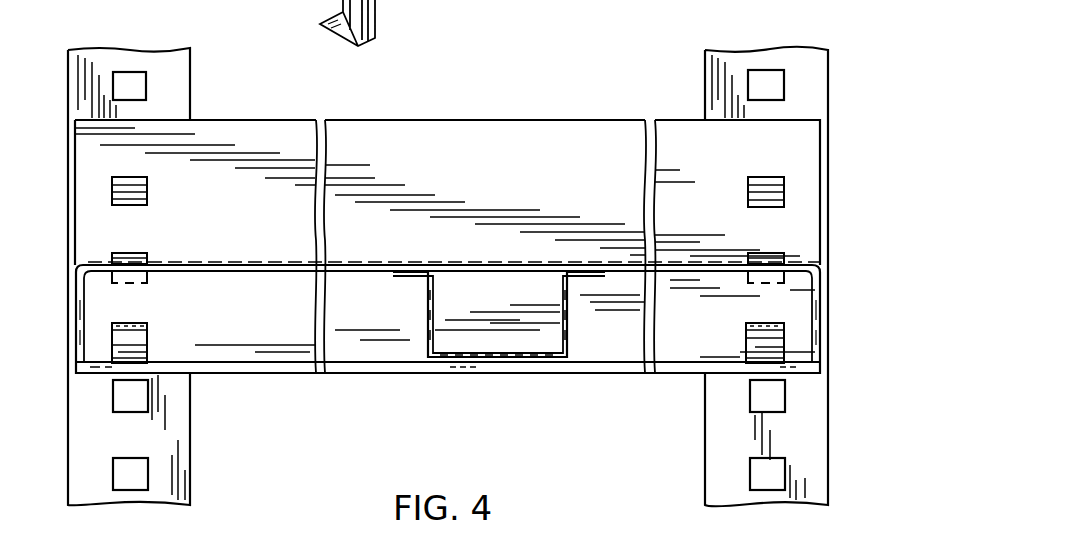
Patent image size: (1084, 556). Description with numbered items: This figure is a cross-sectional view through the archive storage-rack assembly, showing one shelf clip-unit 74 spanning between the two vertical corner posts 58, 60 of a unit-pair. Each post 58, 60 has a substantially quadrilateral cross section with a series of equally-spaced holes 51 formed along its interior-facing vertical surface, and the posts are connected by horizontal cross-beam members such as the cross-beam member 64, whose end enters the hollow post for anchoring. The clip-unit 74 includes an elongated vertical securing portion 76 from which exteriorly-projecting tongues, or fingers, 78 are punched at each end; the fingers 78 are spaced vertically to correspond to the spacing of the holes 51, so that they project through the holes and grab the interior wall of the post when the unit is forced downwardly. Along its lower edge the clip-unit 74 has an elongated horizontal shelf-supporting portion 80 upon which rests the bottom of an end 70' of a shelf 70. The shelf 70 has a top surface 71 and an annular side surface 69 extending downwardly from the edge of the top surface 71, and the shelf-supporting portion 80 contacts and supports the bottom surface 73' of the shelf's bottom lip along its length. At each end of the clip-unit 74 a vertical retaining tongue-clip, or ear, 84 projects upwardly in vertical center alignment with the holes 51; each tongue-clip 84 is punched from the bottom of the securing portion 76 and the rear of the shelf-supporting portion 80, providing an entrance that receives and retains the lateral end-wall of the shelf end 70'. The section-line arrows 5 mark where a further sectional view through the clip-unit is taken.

The section line 5- 5 is at (128, 10).
The holes 51 is at (137, 88).
The vertical post 58 is at (810, 85).
The vertical post 60 is at (68, 75).
The horizontal cross-beam member 64 is at (310, 23).
The annular side surface 69 is at (384, 317).
The shelf 70 is at (485, 297).
The shelf end 70' is at (451, 293).
The top surface 71 is at (255, 265).
The bottom surface 73' is at (258, 326).
The clip-unit 74 is at (478, 115).
The securing portion 76 is at (514, 170).
The fingers 78 is at (137, 192).
The shelf-supporting portion 80 is at (260, 373).
The retaining tongue-clip 84 is at (150, 340).